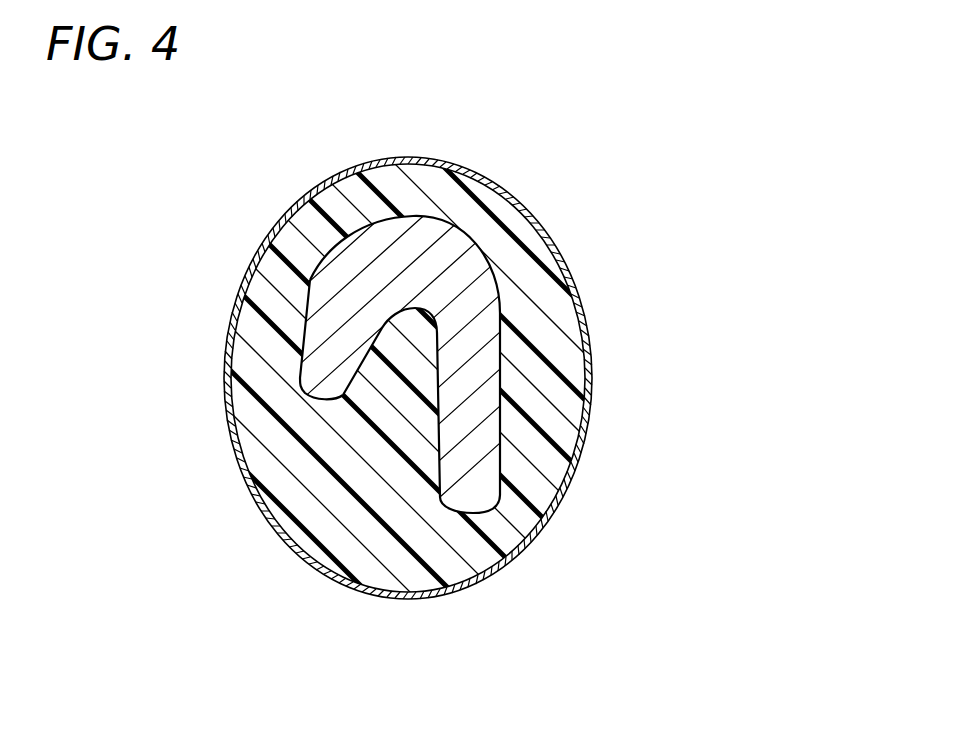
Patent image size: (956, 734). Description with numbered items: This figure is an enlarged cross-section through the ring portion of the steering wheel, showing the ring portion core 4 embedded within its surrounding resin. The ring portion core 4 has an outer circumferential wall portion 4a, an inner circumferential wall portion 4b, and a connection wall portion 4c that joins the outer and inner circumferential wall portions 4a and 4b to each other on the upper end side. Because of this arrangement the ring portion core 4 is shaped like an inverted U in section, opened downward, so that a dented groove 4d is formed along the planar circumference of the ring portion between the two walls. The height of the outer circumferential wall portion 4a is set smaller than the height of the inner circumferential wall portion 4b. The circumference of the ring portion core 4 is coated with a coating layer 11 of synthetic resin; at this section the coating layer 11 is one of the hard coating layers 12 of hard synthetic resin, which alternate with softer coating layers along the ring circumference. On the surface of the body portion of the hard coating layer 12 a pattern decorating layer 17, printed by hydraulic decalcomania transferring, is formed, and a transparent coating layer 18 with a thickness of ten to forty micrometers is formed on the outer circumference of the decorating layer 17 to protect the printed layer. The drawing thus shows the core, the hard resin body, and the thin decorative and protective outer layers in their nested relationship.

The ring portion core 4 is at (357, 339).
The outer circumferential wall portion 4a is at (337, 340).
The inner circumferential wall portion 4b is at (463, 367).
The connection wall portion 4c is at (403, 257).
The dented groove 4d is at (370, 437).
The hard coating layer 12 is at (547, 295).
The coating layer 11 is at (487, 367).
The pattern decorating layer 17 is at (588, 445).
The coating layer 18 is at (592, 408).